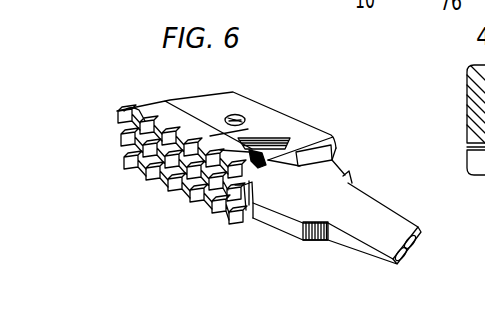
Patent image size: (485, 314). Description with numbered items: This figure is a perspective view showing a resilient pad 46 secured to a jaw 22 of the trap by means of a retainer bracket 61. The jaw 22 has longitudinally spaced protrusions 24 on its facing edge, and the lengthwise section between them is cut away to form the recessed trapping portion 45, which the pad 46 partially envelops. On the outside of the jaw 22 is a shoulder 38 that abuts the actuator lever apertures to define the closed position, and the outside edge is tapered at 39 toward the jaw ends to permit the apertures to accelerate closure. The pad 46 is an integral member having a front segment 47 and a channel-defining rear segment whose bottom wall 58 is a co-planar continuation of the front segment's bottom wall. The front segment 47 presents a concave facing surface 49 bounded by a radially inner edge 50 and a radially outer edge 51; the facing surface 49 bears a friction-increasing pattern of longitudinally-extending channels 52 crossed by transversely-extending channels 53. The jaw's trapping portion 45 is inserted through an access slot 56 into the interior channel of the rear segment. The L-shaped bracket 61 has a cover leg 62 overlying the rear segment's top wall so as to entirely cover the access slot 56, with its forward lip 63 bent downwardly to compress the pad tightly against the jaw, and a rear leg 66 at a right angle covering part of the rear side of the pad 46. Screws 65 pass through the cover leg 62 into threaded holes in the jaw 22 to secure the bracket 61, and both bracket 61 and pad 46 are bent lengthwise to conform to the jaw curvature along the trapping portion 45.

The pad 46 is at (101, 131).
The front segment 47 is at (140, 104).
The radially outer edge 51 is at (147, 121).
The screws 65 is at (243, 114).
The retainer bracket 61 is at (272, 110).
The cover leg 62 is at (294, 132).
The access slot 56 is at (337, 143).
The rear leg 66 is at (334, 157).
The shoulder 38 is at (353, 173).
The tapered outside edge 39 is at (393, 206).
The jaw 22 is at (398, 241).
The protrusions 24 is at (291, 228).
The trapping portion 45 is at (247, 218).
The bottom wall 58 is at (236, 226).
The longitudinally-extending channels 52 is at (218, 214).
The facing surface 49 is at (178, 192).
The transversely-extending channels 53 is at (166, 190).
The radially inner edge 50 is at (148, 192).
The lip 63 is at (264, 169).